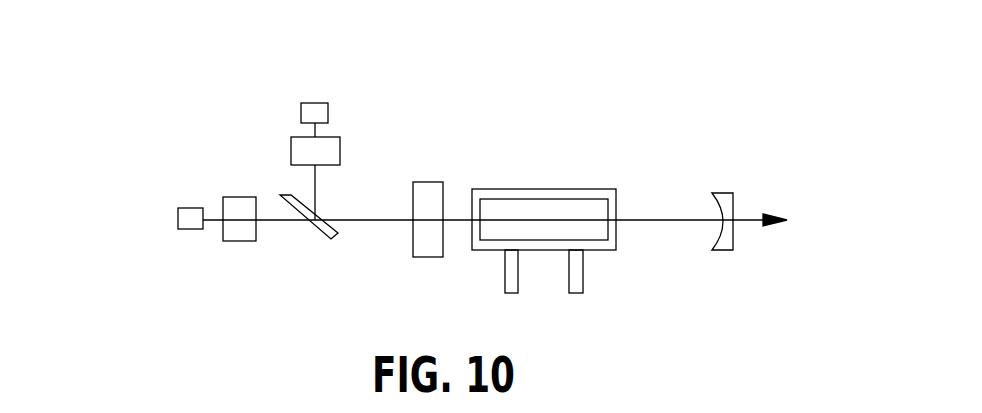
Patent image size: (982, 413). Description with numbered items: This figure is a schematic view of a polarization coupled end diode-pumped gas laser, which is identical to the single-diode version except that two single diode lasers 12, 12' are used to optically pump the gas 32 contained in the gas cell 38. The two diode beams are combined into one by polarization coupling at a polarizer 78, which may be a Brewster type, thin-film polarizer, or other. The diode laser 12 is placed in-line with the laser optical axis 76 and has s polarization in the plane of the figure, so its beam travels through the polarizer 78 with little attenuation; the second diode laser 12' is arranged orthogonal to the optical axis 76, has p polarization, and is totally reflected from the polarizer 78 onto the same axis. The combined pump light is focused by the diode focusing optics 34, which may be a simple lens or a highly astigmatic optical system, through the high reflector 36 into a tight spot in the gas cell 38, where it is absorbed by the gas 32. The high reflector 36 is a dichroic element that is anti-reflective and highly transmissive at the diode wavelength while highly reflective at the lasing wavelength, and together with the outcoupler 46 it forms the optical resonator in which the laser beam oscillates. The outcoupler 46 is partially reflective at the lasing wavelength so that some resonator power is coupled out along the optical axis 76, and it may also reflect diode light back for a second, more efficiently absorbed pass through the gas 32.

The diode laser 12 is at (157, 204).
The diode laser 12' is at (322, 86).
The diode focusing optics 34 is at (291, 152).
The polarizer 78 is at (315, 231).
The laser optical axis 76 is at (363, 221).
The high reflector 36 is at (431, 182).
The gas cell 38 is at (508, 189).
The lasing gas 32 is at (598, 226).
The outcoupler 46 is at (735, 240).